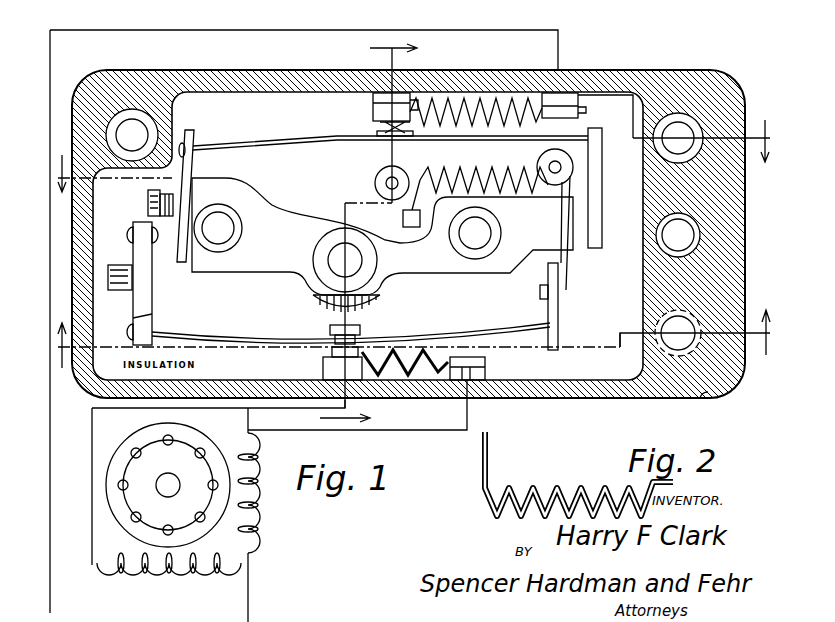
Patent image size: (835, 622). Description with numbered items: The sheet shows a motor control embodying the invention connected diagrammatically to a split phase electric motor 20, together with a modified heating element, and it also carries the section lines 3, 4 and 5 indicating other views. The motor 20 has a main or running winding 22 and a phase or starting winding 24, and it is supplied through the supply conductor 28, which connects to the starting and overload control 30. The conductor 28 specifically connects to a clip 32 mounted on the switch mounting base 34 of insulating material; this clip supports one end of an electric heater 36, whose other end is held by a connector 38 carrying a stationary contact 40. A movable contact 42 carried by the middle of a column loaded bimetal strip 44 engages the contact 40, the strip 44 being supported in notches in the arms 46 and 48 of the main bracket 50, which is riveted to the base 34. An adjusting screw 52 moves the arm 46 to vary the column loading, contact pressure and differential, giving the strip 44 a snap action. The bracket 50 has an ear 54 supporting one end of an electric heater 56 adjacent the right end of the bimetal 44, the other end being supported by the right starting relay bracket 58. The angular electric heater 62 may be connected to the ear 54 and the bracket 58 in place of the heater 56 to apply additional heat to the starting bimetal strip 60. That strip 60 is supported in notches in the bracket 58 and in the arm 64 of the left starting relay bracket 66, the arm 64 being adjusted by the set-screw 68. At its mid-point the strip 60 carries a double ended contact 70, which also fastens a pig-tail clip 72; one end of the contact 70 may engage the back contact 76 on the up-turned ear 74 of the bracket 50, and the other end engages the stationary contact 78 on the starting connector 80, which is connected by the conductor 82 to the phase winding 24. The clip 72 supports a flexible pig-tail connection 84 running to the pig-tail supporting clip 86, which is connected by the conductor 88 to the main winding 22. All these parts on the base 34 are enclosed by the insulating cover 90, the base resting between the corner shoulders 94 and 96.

In FIG. 1, the split phase electric motor 20 is at (197, 440).
In FIG. 1, the main or running winding 22 is at (264, 505).
In FIG. 1, the phase or starting winding 24 is at (172, 580).
In FIG. 1, the supply conductor 28 is at (50, 468).
In FIG. 1, the starting and overload control 30 is at (753, 232).
In FIG. 1, the clip 32 is at (560, 97).
In FIG. 1, the switch mounting base 34 is at (622, 324).
In FIG. 1, the electric heater 36 is at (500, 100).
In FIG. 1, the connector 38 is at (373, 111).
In FIG. 1, the stationary contact 40 is at (383, 129).
In FIG. 1, the movable contact 42 is at (383, 138).
In FIG. 1, the column loaded bimetal strip 44 is at (283, 143).
In FIG. 1, the arm 46 is at (194, 137).
In FIG. 1, the arm 48 is at (602, 170).
In FIG. 1, the main bracket 50 is at (320, 208).
In FIG. 1, the adjusting screw 52 is at (147, 198).
In FIG. 1, the ear 54 is at (412, 227).
In FIG. 1, the electric heater 56 is at (492, 172).
In FIG. 1, the right starting relay bracket 58 is at (560, 282).
In FIG. 1, the starting bimetal strip 60 is at (492, 338).
In FIG. 2, the electric heater 62 is at (560, 490).
In FIG. 1, the arm 64 is at (153, 303).
In FIG. 1, the left starting relay bracket 66 is at (137, 314).
In FIG. 1, the set-screw 68 is at (114, 265).
In FIG. 1, the double ended contact 70 is at (330, 328).
In FIG. 1, the pig-tail clip 72 is at (357, 330).
In FIG. 1, the up-turned ear 74 is at (313, 298).
In FIG. 1, the stationary contact 76 is at (380, 300).
In FIG. 1, the stationary contact 78 is at (333, 352).
In FIG. 1, the starting connector 80 is at (323, 366).
In FIG. 1, the conductor 82 is at (92, 515).
In FIG. 1, the flexible electric cable or pig-tail connection 84 is at (405, 380).
In FIG. 1, the pig-tail supporting clip 86 is at (487, 362).
In FIG. 1, the conductor 88 is at (465, 432).
In FIG. 1, the cover 90 is at (708, 393).
In FIG. 1, the shoulder 94 is at (656, 231).
In FIG. 1, the shoulder 96 is at (157, 117).
In FIG. 1, the section line 3- 3 is at (412, 145).
In FIG. 1, the section line 4- 4 is at (413, 353).
In FIG. 1, the section line 5- 5 is at (360, 235).